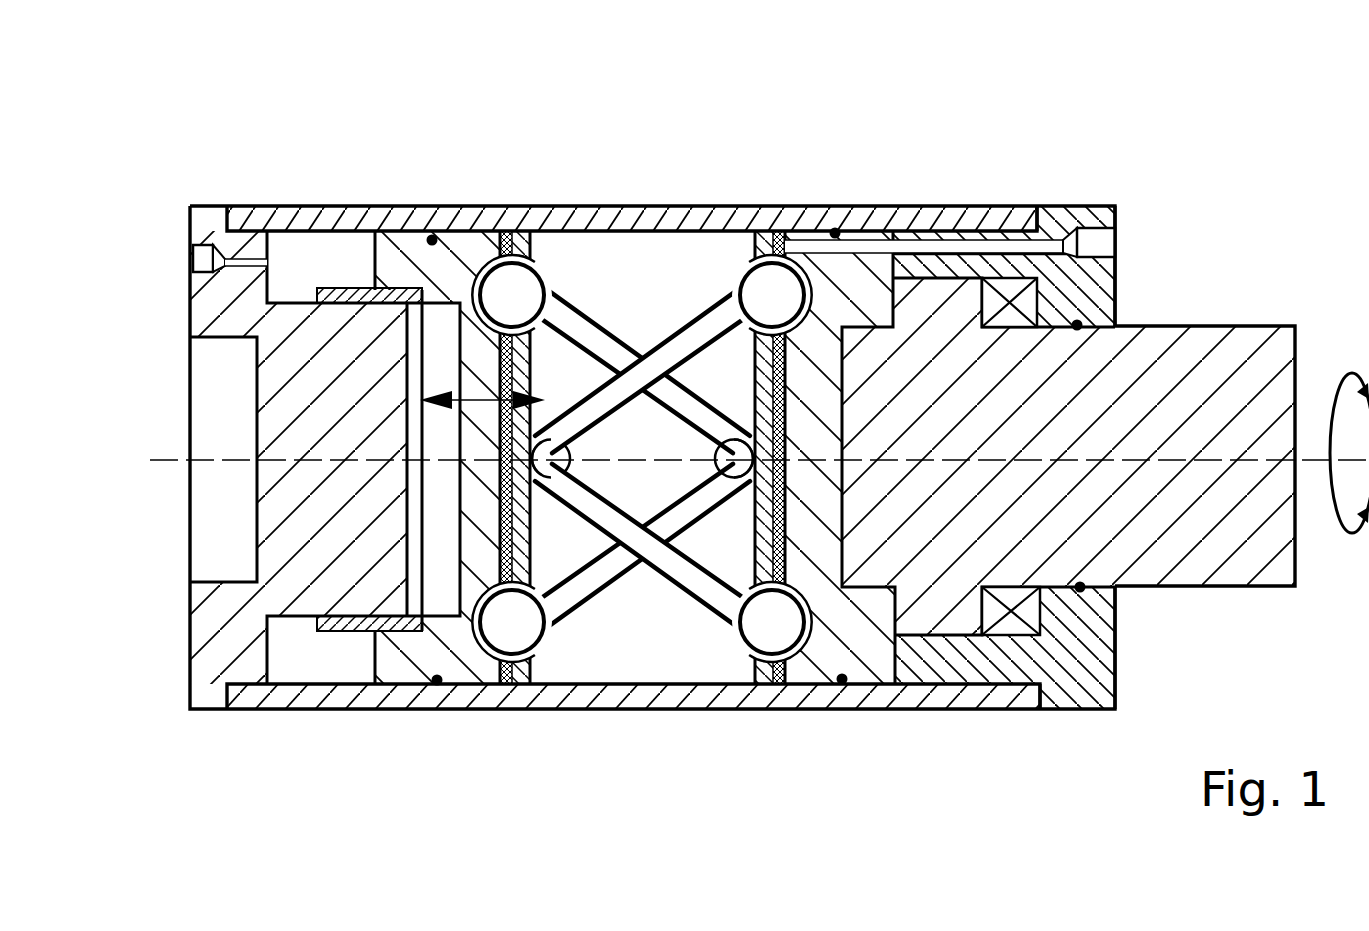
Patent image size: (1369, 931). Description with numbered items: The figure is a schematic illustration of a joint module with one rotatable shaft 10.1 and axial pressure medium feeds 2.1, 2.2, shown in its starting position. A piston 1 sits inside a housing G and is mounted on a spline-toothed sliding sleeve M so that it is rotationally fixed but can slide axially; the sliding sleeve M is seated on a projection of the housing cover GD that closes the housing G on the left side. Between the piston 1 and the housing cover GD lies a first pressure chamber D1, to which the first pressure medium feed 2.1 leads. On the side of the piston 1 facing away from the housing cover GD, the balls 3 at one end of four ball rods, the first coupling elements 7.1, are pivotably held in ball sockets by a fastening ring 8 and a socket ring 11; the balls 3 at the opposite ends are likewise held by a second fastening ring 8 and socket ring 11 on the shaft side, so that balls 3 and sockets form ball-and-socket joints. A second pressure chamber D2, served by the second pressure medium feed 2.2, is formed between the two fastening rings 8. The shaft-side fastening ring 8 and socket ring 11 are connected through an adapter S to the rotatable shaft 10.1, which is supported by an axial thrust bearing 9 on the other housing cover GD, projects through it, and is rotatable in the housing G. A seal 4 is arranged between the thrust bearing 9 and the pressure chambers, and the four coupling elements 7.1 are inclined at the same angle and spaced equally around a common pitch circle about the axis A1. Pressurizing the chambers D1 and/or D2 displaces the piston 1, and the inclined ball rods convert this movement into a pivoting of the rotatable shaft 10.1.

The piston 1 is at (492, 240).
The first pressure medium feed 2.1 is at (192, 258).
The second pressure medium feed 2.2 is at (1116, 226).
The balls 3 is at (502, 297).
The seal 4 is at (432, 240).
The ball rods (first coupling elements) 7.1 is at (708, 583).
The fastening ring 8 is at (511, 628).
The axial thrust bearing 9 is at (1010, 300).
The first rotatable shaft 10.1 is at (1210, 355).
The socket ring 11 is at (505, 652).
The axis A1 is at (743, 462).
The first pressure chamber D1 is at (290, 648).
The second pressure chamber D2 is at (566, 656).
The housing G is at (552, 222).
The housing cover GD is at (210, 308).
The spline-toothed sliding sleeve M is at (347, 636).
The adapter S is at (872, 262).